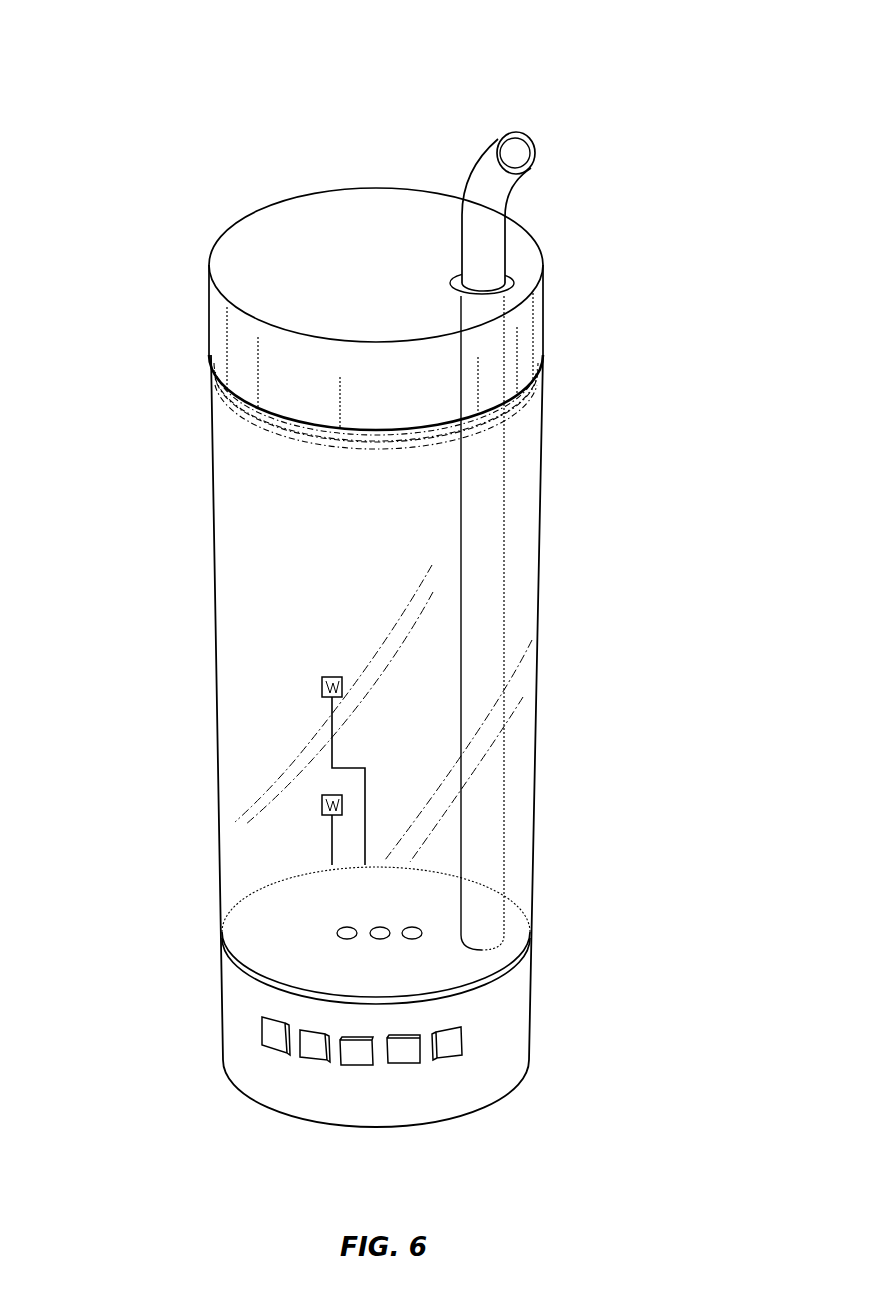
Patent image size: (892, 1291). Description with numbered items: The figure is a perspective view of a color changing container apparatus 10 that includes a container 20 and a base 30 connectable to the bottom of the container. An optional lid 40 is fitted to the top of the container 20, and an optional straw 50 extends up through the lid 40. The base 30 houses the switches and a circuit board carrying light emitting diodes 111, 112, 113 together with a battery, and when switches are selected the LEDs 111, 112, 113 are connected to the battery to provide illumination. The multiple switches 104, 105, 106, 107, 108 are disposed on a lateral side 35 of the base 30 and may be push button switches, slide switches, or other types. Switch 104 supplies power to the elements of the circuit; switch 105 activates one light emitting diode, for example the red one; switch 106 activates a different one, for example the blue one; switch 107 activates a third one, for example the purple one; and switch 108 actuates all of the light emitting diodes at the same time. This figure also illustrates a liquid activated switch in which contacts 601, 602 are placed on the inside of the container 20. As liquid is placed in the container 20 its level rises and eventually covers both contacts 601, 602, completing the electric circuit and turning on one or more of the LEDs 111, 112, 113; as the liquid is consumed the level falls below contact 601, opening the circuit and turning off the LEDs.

The color changing container apparatus 10 is at (575, 52).
The container 20 is at (520, 560).
The base 30 is at (505, 1010).
The lateral side 35 is at (473, 1083).
The lid 40 is at (532, 334).
The straw 50 is at (520, 157).
The switch 104 is at (272, 1032).
The switch 105 is at (405, 1050).
The switch 106 is at (308, 1042).
The switch 107 is at (447, 1040).
The switch 108 is at (352, 1048).
The light emitting diode 111 is at (347, 930).
The light emitting diode 112 is at (380, 930).
The light emitting diode 113 is at (412, 930).
The contact 601 is at (322, 688).
The contact 602 is at (322, 806).